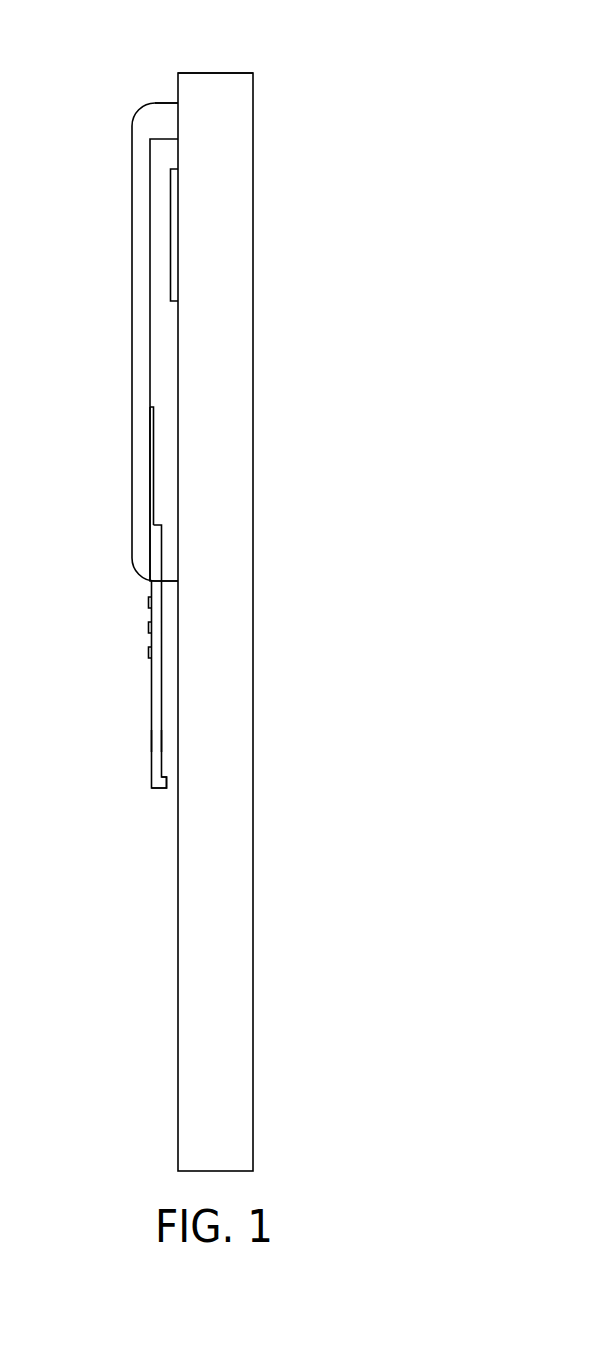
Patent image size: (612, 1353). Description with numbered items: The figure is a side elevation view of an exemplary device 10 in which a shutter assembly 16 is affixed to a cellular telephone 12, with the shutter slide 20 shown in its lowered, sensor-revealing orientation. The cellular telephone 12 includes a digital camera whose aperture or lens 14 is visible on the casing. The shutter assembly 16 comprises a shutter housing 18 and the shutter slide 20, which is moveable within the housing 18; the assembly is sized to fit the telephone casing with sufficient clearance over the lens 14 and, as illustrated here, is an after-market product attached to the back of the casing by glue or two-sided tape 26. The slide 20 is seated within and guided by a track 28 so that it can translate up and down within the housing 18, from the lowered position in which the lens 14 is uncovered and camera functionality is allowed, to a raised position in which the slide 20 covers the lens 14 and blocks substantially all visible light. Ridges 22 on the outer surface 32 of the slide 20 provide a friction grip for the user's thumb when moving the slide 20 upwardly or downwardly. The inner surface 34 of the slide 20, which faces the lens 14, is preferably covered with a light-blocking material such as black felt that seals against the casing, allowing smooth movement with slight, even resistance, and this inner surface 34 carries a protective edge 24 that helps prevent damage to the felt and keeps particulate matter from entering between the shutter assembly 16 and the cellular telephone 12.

The device 10 is at (377, 205).
The cellular telephone 12 is at (254, 477).
The lens 14 is at (171, 197).
The shutter assembly 16 is at (95, 332).
The shutter housing 18 is at (132, 447).
The shutter slide 20 is at (151, 692).
The ridges 22 is at (148, 602).
The protective edge 24 is at (163, 789).
The two-sided tape 26 is at (178, 117).
The track 28 is at (152, 481).
The outer surface 32 is at (152, 741).
The inner surface 34 is at (162, 742).